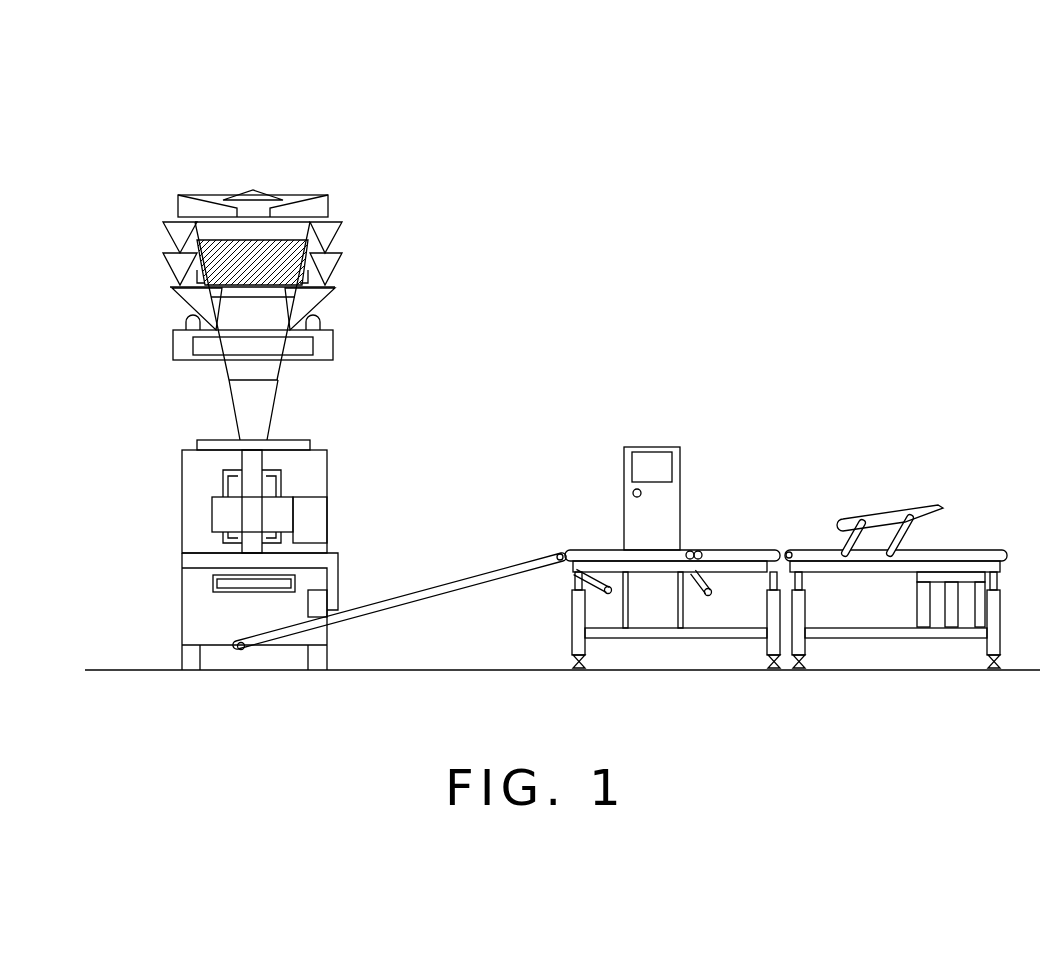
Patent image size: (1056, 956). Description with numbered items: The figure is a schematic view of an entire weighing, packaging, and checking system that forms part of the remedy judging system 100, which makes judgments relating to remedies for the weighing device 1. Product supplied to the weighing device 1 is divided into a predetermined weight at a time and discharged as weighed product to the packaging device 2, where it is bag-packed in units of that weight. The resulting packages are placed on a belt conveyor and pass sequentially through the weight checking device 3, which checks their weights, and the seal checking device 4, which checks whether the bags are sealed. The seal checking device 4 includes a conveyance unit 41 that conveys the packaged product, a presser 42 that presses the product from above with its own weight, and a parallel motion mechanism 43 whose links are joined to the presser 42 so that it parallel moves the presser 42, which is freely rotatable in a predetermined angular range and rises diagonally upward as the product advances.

The weighing device 1 is at (327, 172).
The packaging device 2 is at (346, 437).
The weight checking device 3 is at (637, 437).
The remedy judging system 100 is at (790, 508).
The seal checking device 4 is at (648, 570).
The conveyance unit 41 is at (965, 551).
The presser 42 is at (924, 508).
The parallel motion mechanism 43 is at (840, 543).